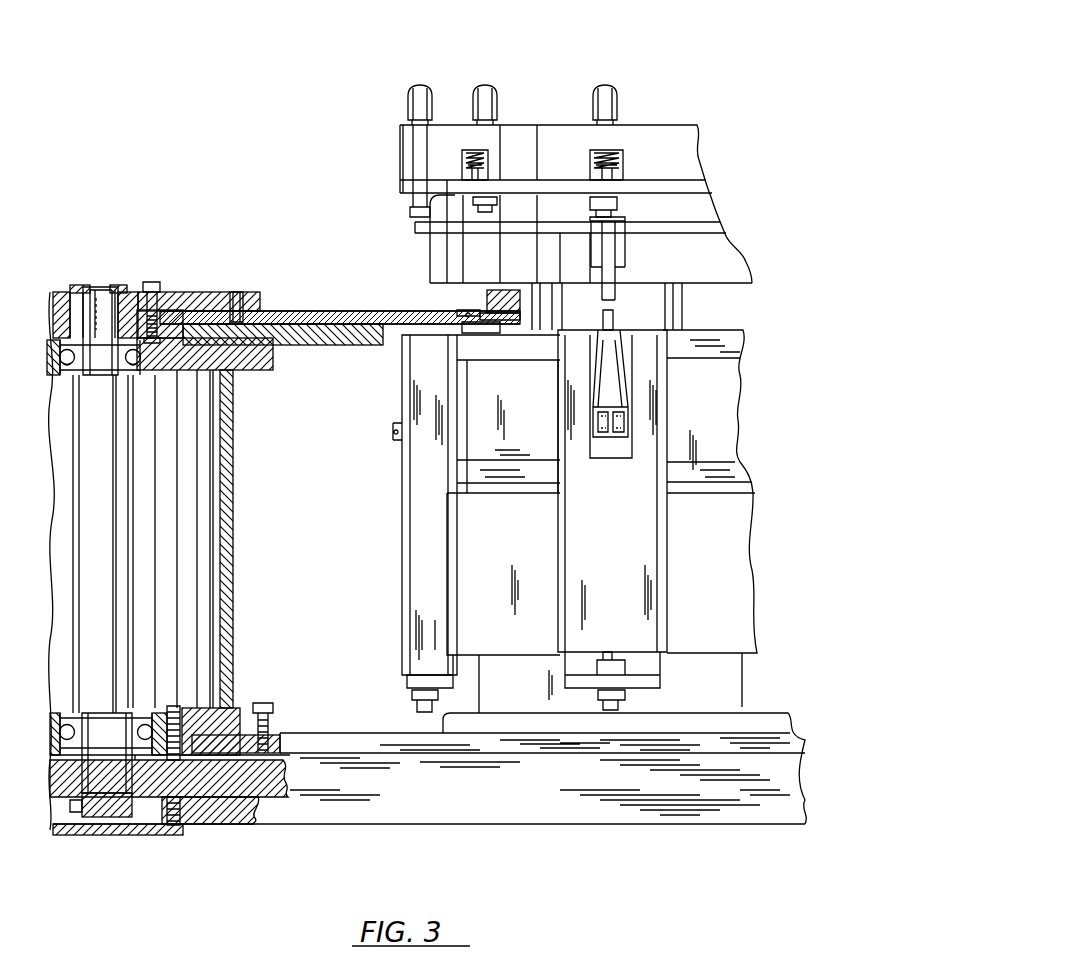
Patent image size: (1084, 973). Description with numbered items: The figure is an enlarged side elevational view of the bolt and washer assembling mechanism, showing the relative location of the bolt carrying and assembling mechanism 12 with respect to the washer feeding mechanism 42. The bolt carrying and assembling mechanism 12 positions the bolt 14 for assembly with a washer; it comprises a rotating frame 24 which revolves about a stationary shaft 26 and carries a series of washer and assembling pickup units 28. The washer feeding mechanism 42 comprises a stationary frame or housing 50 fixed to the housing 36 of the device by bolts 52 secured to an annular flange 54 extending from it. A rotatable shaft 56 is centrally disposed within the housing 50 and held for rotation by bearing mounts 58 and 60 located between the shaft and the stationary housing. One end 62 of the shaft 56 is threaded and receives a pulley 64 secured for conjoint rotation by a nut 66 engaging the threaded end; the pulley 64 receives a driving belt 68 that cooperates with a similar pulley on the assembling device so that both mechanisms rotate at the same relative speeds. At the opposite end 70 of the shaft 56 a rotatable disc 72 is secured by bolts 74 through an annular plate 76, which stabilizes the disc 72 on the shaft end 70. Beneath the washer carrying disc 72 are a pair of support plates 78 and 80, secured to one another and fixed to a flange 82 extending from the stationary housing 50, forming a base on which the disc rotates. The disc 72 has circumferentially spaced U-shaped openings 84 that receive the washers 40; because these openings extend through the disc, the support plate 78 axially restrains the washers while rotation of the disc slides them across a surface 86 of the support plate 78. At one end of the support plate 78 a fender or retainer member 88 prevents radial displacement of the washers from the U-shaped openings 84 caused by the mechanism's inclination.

The bolt carrying and assembling mechanism 12 is at (548, 120).
The bolt 14 is at (618, 249).
The stationary shaft 26 is at (683, 310).
The washer and assembling pickup units 28 is at (413, 498).
The rotating frame 24 is at (532, 592).
The washers 40 is at (482, 333).
The fender or retainer member 88 is at (518, 316).
The U-shaped openings 84 is at (470, 312).
The surface of support plate 86 is at (375, 316).
The rotatable disc 72 is at (283, 315).
The support plate 78 is at (312, 319).
The support plate 80 is at (350, 346).
The flange 82 is at (252, 371).
The annular plate 76 is at (211, 310).
The bolts 74 is at (162, 289).
The washer feeding mechanism 42 is at (118, 290).
The end of shaft 70 is at (100, 340).
The bearing mount 60 is at (131, 372).
The rotatable shaft 56 is at (125, 596).
The stationary frame or housing 50 is at (235, 592).
The threaded end of shaft 62 is at (101, 722).
The bearing mount 58 is at (143, 722).
The annular flange 54 is at (247, 712).
The bolts 52 is at (281, 710).
The housing 36 is at (321, 732).
The pulley 64 is at (202, 778).
The nut 66 is at (69, 808).
The driving belt 68 is at (220, 798).